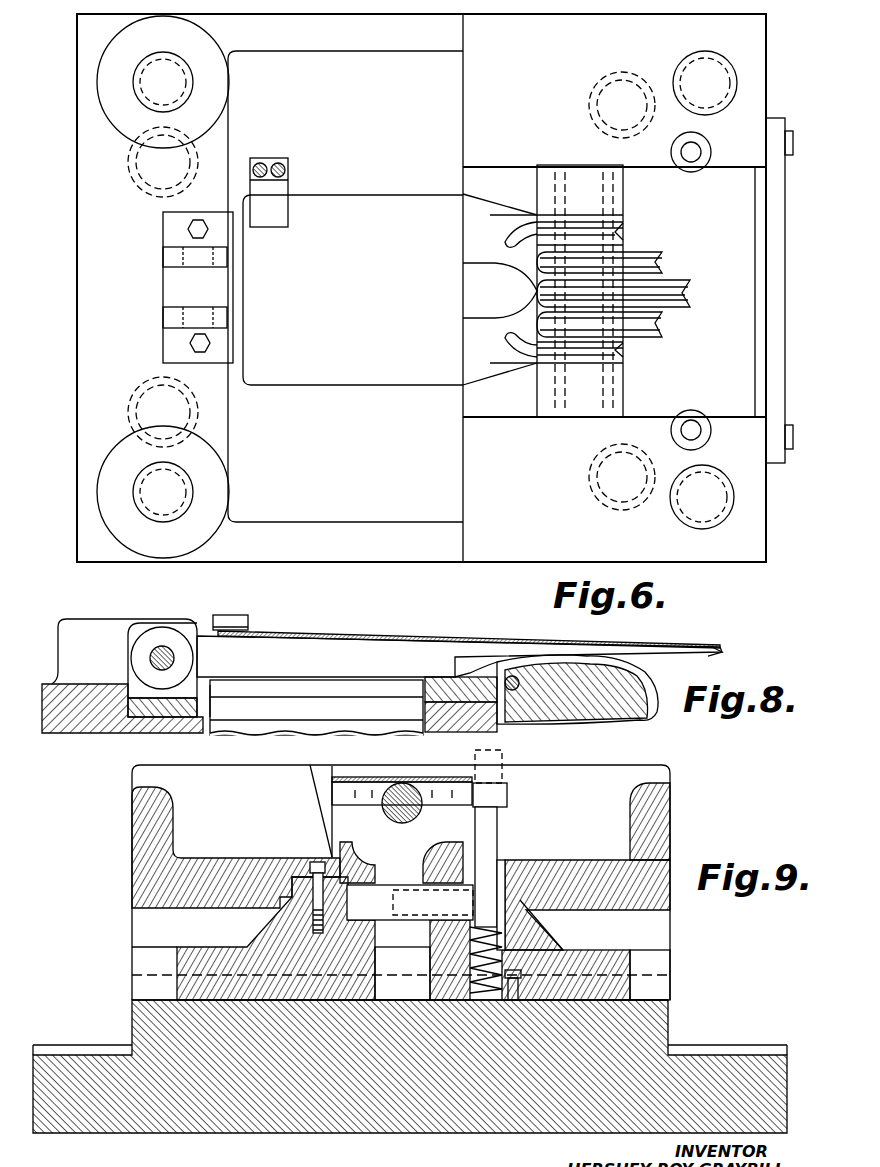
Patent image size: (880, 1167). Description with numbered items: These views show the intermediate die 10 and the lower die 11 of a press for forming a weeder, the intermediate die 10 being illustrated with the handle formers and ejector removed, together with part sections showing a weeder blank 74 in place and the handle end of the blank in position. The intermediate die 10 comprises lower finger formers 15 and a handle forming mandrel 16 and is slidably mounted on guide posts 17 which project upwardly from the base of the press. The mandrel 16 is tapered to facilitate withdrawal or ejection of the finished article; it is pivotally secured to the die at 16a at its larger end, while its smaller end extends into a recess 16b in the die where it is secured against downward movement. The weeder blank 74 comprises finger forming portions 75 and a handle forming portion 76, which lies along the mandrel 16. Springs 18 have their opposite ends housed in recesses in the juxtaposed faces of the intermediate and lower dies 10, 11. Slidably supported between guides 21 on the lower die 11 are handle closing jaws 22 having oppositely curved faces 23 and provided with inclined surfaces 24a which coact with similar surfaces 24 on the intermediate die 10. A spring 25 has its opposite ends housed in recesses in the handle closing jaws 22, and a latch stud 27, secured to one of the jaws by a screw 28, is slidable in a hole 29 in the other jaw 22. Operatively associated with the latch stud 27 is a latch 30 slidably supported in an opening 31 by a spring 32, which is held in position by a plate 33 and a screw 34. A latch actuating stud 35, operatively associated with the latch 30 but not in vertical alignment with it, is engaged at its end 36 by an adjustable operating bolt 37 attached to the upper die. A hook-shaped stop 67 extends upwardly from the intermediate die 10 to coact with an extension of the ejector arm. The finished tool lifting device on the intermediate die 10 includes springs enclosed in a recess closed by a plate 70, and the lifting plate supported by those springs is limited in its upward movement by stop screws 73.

In FIG. 8, the intermediate die 10 is at (66, 735).
In FIG. 9, the intermediate die 10 is at (132, 870).
In FIG. 9, the lower die 11 is at (70, 1063).
In FIG. 6, the lower finger formers 15 is at (648, 262).
In FIG. 8, the lower finger formers 15 is at (540, 662).
In FIG. 8, the handle forming mandrel 16 is at (352, 640).
In FIG. 9, the handle forming mandrel 16 is at (405, 795).
In FIG. 8, the pivot of mandrel 16a is at (162, 650).
In FIG. 8, the recess 16b is at (470, 672).
In FIG. 6, the guide posts 17 is at (183, 82).
In FIG. 6, the springs 18 is at (198, 152).
In FIG. 9, the guides 21 is at (653, 962).
In FIG. 9, the handle closing jaws 22 is at (612, 988).
In FIG. 9, the oppositely curved faces 23 is at (362, 858).
In FIG. 9, the inclined surfaces 24 is at (280, 903).
In FIG. 9, the inclined surfaces 24a is at (275, 912).
In FIG. 9, the spring 25 is at (395, 885).
In FIG. 9, the latch stud 27 is at (376, 907).
In FIG. 9, the screw 28 is at (320, 862).
In FIG. 9, the hole 29 is at (428, 948).
In FIG. 9, the latch 30 is at (520, 905).
In FIG. 9, the opening 31 is at (505, 925).
In FIG. 9, the spring 32 is at (497, 967).
In FIG. 9, the plate 33 is at (488, 1000).
In FIG. 9, the screw 34 is at (518, 1000).
In FIG. 9, the latch actuating stud 35 is at (490, 846).
In FIG. 9, the end of latch actuating stud 36 is at (488, 820).
In FIG. 9, the adjustable operating bolt 37 is at (508, 772).
In FIG. 6, the hook-shaped stop 67 is at (272, 197).
In FIG. 8, the hook-shaped stop 67 is at (233, 620).
In FIG. 6, the plate 70 is at (781, 128).
In FIG. 6, the stop screws 73 is at (703, 150).
In FIG. 8, the weeder blank 74 is at (470, 639).
In FIG. 8, the finger forming portions 75 is at (704, 648).
In FIG. 8, the handle forming portion 76 is at (288, 632).
In FIG. 9, the handle forming portion 76 is at (372, 783).